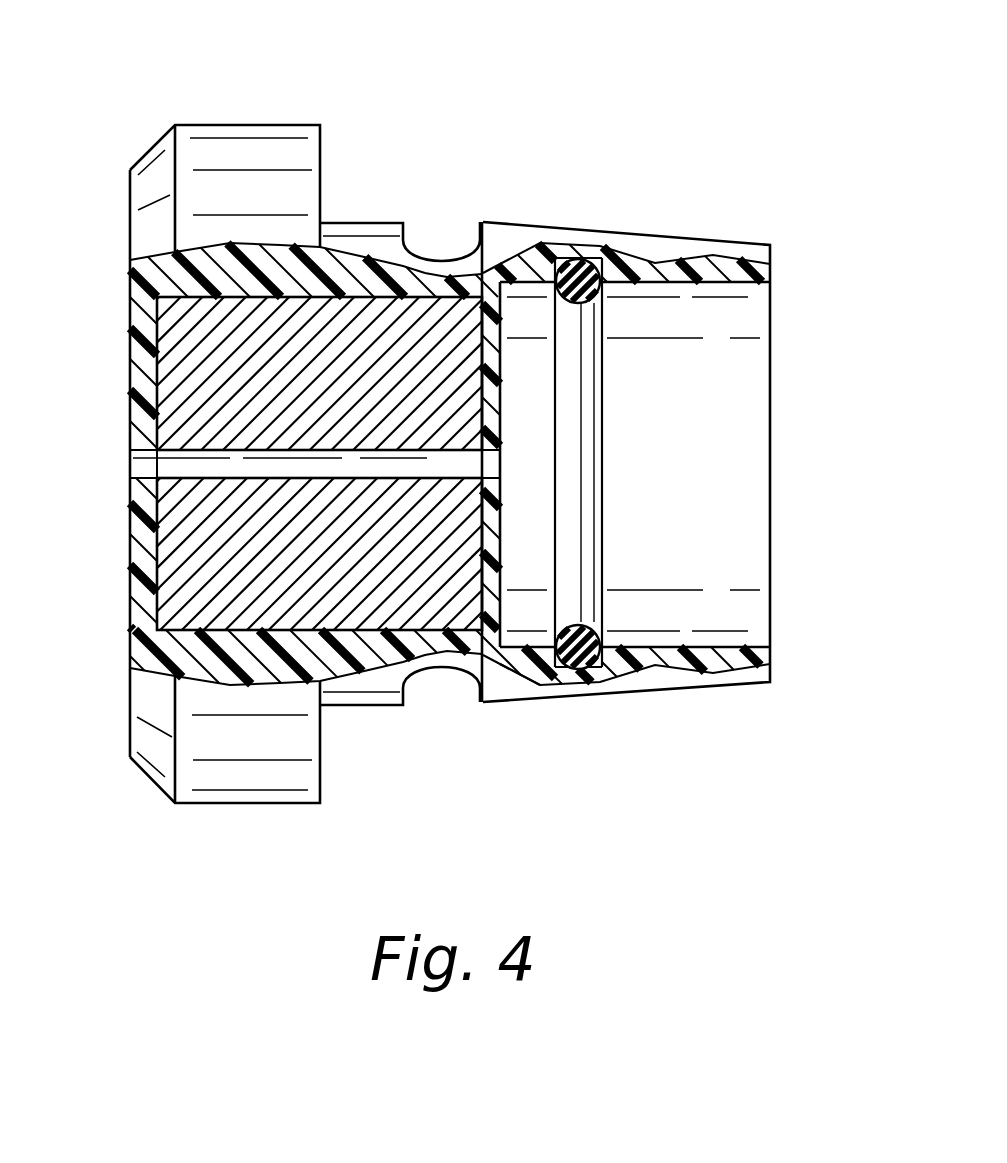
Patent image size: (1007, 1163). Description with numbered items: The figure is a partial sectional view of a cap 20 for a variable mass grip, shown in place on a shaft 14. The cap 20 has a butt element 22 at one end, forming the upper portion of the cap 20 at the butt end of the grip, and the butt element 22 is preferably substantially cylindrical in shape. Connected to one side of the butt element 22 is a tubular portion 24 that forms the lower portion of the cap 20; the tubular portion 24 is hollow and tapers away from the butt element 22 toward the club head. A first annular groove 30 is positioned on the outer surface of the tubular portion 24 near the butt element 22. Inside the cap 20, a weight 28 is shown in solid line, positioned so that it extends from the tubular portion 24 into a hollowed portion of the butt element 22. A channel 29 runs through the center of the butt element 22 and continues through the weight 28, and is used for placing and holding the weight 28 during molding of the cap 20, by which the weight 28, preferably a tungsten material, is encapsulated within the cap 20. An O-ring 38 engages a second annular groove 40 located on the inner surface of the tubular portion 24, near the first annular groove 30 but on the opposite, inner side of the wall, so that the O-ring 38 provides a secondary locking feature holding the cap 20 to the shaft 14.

The cap 20 is at (457, 404).
The butt element 22 is at (267, 142).
The first annular groove 30 is at (430, 258).
The O-ring 38 is at (592, 300).
The shaft 14 is at (770, 388).
The channel 29 is at (237, 477).
The weight 28 is at (270, 555).
The second annular groove 40 is at (528, 667).
The tubular portion 24 is at (650, 680).